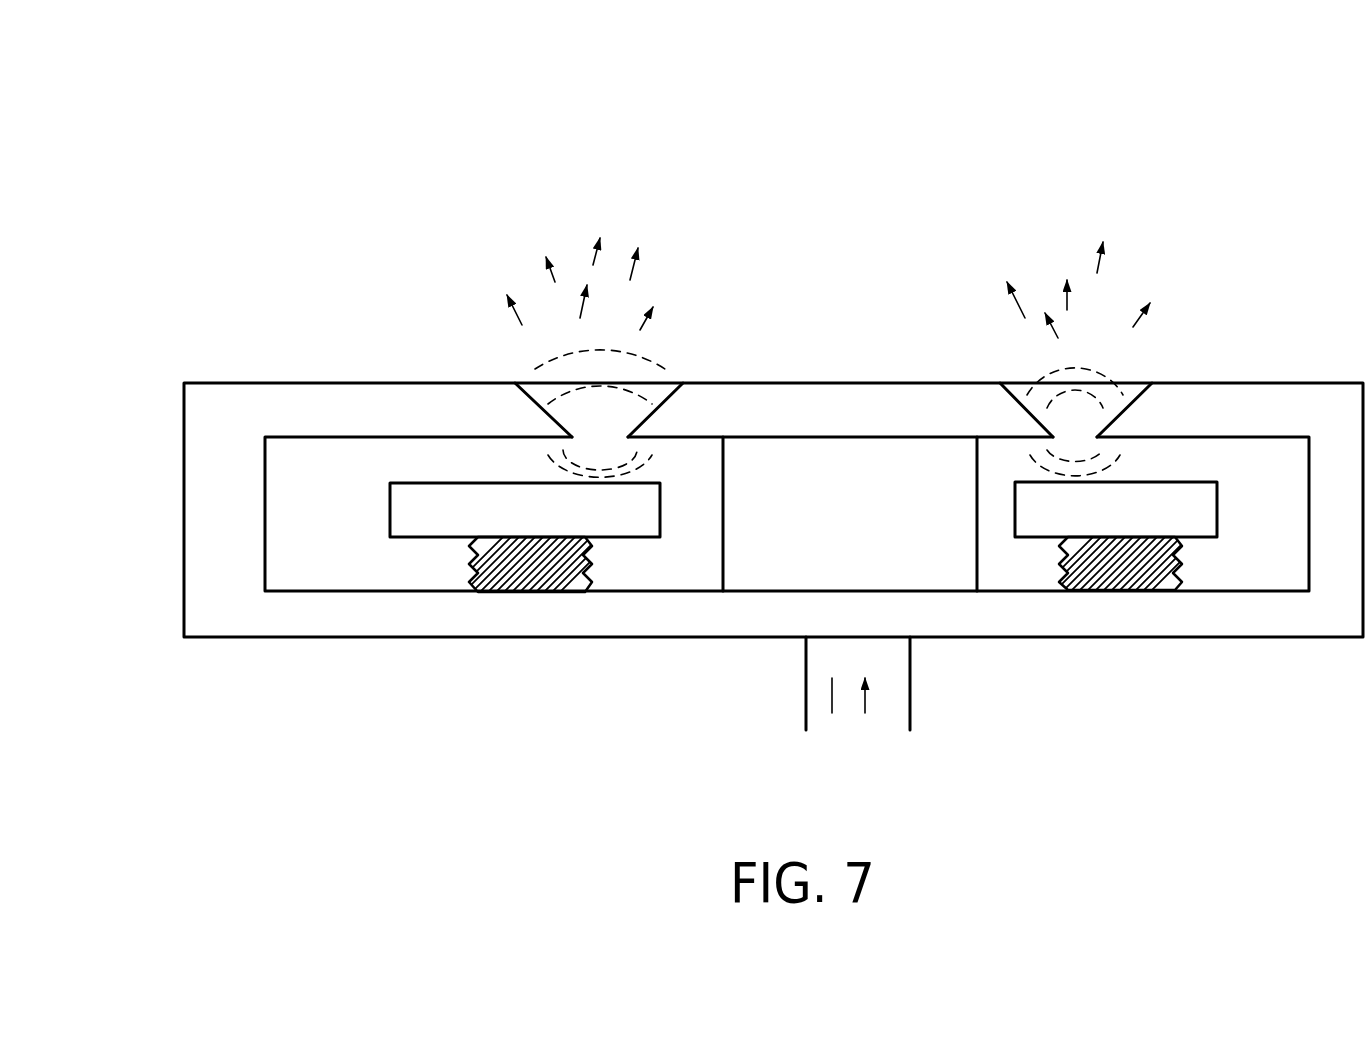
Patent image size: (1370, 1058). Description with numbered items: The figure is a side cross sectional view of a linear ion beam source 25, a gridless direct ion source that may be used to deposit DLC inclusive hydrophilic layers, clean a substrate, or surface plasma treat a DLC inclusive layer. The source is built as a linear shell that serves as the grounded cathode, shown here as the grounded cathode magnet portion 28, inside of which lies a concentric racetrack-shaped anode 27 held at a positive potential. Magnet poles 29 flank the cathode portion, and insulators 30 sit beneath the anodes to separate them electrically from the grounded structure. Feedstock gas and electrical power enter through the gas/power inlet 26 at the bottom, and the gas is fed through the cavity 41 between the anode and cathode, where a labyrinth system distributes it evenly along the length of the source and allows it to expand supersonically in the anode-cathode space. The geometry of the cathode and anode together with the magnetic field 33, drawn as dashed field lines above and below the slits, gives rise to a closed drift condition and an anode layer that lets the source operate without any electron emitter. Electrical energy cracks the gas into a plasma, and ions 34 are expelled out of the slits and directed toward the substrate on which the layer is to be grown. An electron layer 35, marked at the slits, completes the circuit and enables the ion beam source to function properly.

The linear ion beam source 25 is at (840, 135).
The gas/power inlet 26 is at (806, 672).
The racetrack-shaped anode 27 is at (400, 508).
The grounded cathode magnet portion 28 is at (945, 462).
The magnet poles 29 is at (343, 398).
The insulators 30 is at (540, 583).
The magnetic field 33 is at (640, 393).
The ions 34 is at (518, 305).
The electron layer 35 is at (605, 432).
The cavity 41 is at (1008, 575).